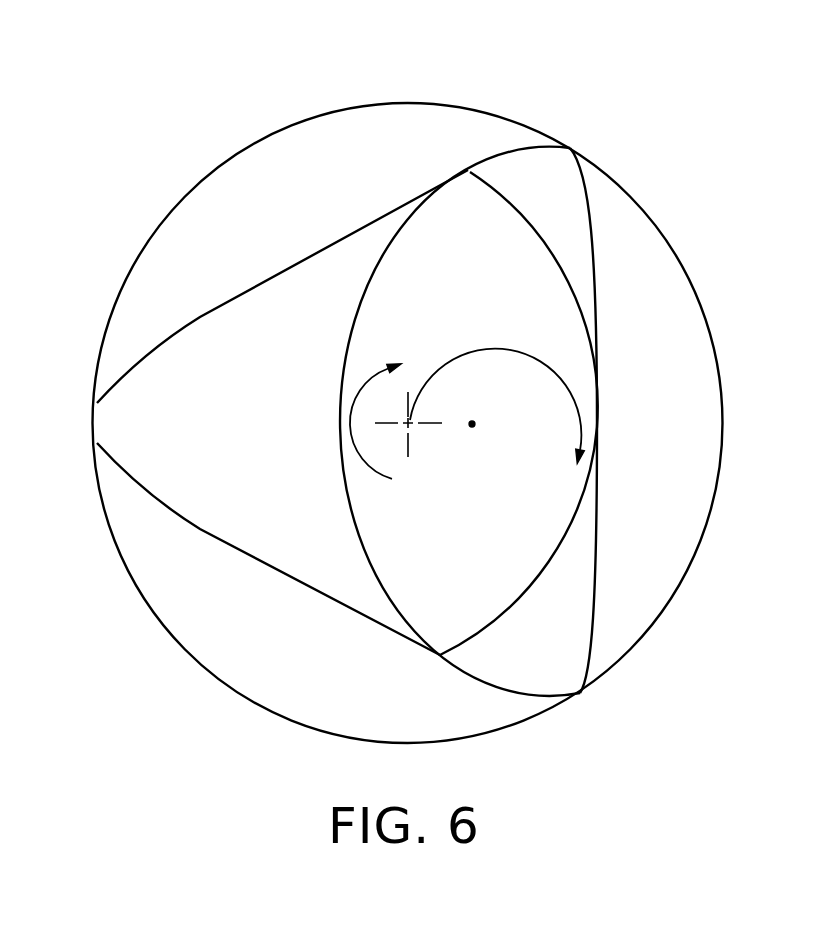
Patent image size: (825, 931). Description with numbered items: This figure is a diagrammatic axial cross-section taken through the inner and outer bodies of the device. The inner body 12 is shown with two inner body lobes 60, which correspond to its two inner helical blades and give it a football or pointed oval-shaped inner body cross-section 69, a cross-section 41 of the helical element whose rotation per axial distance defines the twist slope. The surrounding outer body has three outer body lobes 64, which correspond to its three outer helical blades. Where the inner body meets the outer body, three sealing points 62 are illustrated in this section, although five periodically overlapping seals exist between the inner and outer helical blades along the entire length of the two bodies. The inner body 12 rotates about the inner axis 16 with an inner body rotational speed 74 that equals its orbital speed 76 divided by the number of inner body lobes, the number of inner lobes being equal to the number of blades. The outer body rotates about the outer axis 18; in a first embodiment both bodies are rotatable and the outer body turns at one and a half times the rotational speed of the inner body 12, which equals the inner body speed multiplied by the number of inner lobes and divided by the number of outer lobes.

The inner body 12 is at (372, 517).
The inner axis 16 is at (411, 428).
The outer axis 18 is at (475, 427).
The cross-section of the helical element 41 is at (553, 330).
The inner body lobes 60 is at (500, 223).
The sealing points 62 is at (468, 168).
The outer body lobes 64 is at (242, 168).
The inner body cross-section 69 is at (558, 498).
The inner body rotational speed 74 is at (350, 438).
The orbital speed 76 is at (490, 347).